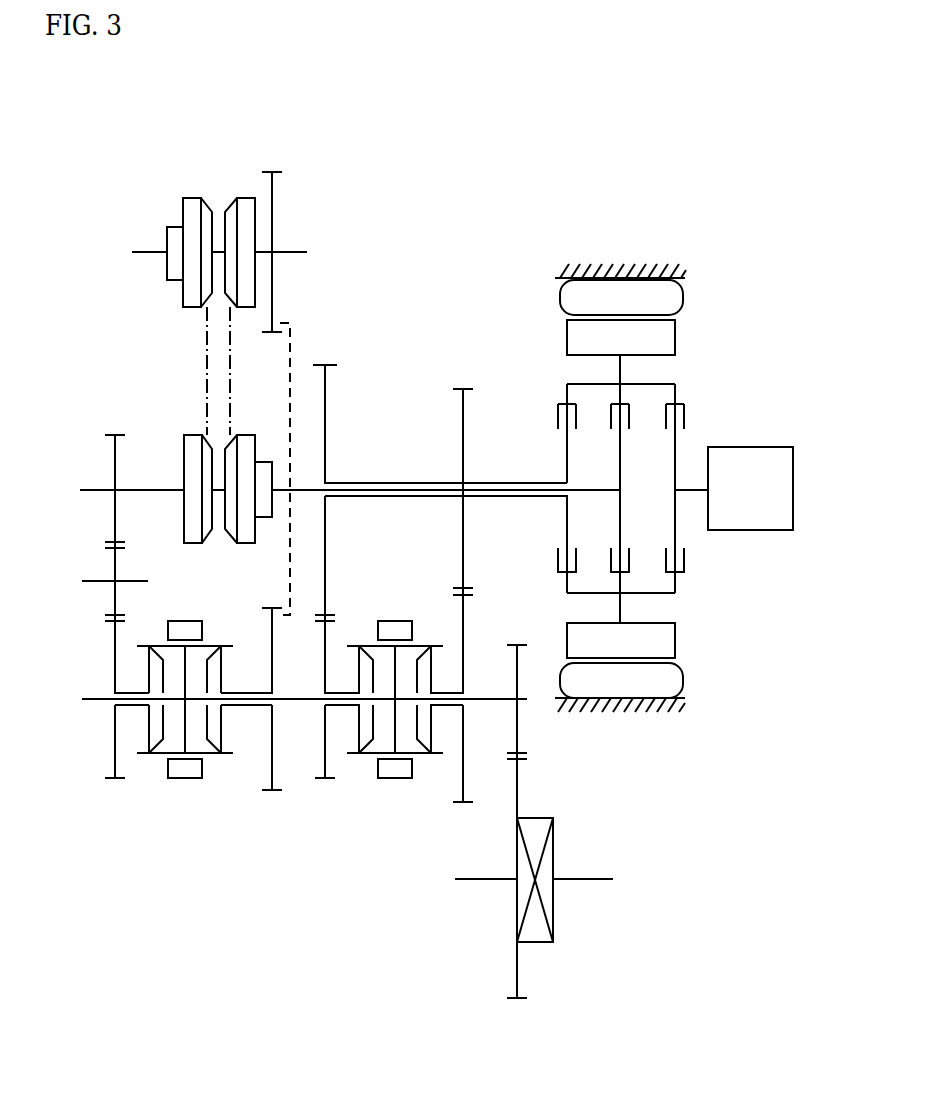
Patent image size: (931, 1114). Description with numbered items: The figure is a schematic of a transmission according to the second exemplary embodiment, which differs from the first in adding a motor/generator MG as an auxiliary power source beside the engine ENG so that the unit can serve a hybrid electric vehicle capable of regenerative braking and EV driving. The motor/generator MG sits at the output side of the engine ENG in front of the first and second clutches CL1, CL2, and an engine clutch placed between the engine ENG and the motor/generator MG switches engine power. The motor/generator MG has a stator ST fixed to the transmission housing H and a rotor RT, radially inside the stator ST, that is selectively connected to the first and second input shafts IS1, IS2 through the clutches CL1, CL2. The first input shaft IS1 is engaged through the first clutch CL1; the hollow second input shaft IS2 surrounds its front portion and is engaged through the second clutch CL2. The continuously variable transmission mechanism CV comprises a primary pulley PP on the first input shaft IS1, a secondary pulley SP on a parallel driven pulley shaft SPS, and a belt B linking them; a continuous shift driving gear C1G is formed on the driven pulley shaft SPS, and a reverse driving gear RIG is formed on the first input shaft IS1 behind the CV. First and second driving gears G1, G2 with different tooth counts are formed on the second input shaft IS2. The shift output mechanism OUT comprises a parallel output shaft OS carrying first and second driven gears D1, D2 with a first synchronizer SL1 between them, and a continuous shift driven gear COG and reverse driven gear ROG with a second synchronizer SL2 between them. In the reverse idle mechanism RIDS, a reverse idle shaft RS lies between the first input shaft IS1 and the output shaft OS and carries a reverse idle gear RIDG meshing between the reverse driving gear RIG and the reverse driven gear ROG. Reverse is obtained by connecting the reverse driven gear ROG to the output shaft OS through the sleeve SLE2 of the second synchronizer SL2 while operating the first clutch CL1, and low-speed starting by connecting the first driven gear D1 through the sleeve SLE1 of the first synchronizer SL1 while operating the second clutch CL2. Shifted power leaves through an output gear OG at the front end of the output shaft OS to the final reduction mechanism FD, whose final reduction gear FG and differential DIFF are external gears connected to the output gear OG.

The continuously variable transmission mechanism CV is at (135, 195).
The secondary pulley SP is at (165, 288).
The driven pulley shaft SPS is at (292, 255).
The belt B is at (207, 355).
The primary pulley PP is at (175, 455).
The continuous shift driving gear C1G is at (274, 205).
The continuous shift driven gear COG is at (272, 767).
The first input shaft IS1 is at (523, 493).
The second input shaft IS2 is at (407, 497).
The first driving gear G1 is at (465, 573).
The second driving gear G2 is at (327, 590).
The first driven gear D1 is at (465, 782).
The second driven gear D2 is at (327, 757).
The reverse driving gear RIG is at (113, 512).
The reverse idle gear RIDG is at (113, 566).
The reverse idle shaft RS is at (95, 583).
The reverse idle mechanism RIDS is at (108, 598).
The reverse driven gear ROG is at (115, 757).
The output shaft OS is at (298, 700).
The second synchronizer SL2 is at (188, 776).
The sleeve SLE2 is at (173, 779).
The first synchronizer SL1 is at (397, 776).
The sleeve SLE1 is at (383, 779).
The shift output mechanism OUT is at (527, 672).
The output gear OG is at (519, 735).
The final reduction mechanism FD is at (580, 846).
The final reduction gear FG is at (519, 788).
The differential DIFF is at (553, 863).
The motor/generator MG is at (667, 449).
The transmission housing H is at (583, 277).
The stator ST is at (683, 290).
The rotor RT is at (654, 489).
The first clutch CL1 is at (607, 402).
The second clutch CL2 is at (557, 400).
The engine ENG is at (750, 488).